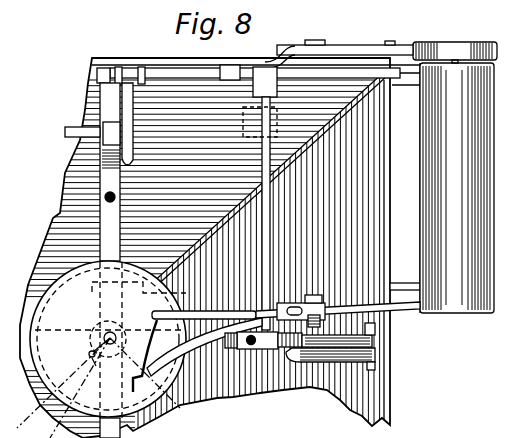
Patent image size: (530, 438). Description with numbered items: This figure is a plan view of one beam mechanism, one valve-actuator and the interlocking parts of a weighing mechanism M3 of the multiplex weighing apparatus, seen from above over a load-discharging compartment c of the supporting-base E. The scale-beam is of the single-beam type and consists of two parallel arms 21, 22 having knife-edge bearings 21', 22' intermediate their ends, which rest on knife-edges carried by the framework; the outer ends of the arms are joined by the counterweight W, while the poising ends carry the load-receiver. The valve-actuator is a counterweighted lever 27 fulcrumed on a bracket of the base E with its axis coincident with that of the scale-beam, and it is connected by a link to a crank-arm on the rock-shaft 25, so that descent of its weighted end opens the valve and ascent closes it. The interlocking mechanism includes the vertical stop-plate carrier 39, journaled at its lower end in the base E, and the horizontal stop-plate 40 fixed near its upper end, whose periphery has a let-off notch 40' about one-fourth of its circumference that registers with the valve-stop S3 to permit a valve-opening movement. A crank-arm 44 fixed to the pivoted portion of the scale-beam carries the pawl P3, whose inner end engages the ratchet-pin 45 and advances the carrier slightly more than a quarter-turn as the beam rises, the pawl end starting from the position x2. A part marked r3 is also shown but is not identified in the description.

The supporting-base E is at (108, 66).
The beam-arm 21 is at (262, 58).
The knife-edge bearing 21' is at (339, 44).
The valve-actuator 27 is at (450, 46).
The counterweight W is at (457, 188).
The post r3 is at (121, 237).
The rock-shaft 25 is at (268, 235).
The stop-plate 40 is at (108, 339).
The stop-plate carrier 39 is at (110, 332).
The ratchet-pin 45 is at (89, 356).
The let-off notch 40' is at (153, 356).
The pawl-end position x2 is at (178, 400).
The valve-stop S3 is at (213, 310).
The pawl P3 is at (226, 340).
The load-discharging compartment c is at (253, 354).
The beam-arm 22 is at (338, 336).
The crank-arm 44 is at (315, 306).
The knife-edge bearing 22' is at (332, 323).
The weighing mechanism M3 is at (453, 355).